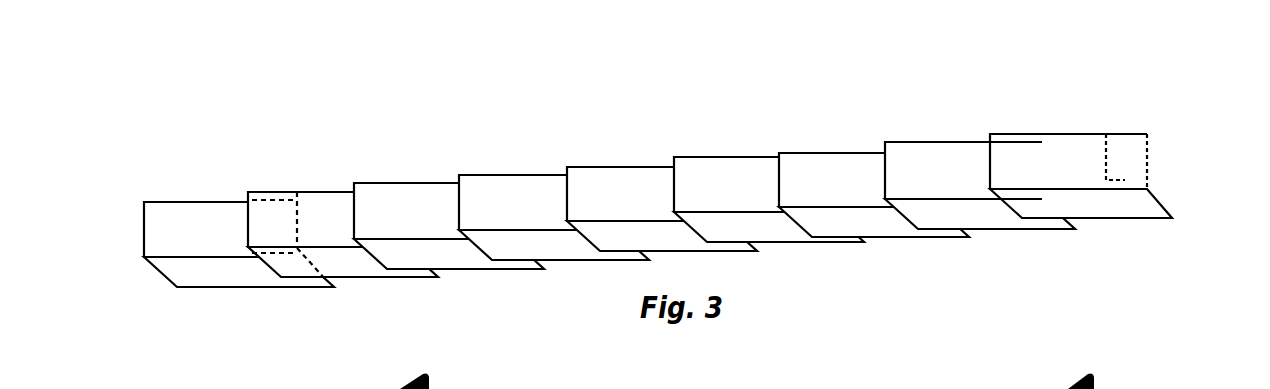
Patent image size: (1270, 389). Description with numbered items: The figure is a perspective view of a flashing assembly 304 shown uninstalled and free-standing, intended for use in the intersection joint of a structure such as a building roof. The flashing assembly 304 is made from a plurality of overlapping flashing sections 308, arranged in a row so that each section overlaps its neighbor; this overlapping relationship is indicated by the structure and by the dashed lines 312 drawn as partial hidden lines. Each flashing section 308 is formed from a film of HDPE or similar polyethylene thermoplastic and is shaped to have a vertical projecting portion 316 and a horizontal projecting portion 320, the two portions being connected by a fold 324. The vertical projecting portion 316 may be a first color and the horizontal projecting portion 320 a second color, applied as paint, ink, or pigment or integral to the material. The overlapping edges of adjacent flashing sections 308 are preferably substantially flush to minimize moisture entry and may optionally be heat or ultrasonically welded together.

The flashing assembly 304 is at (648, 73).
The flashing section 308 is at (1143, 202).
The dashed lines 312 is at (316, 211).
The vertical projecting portion 316 is at (928, 140).
The horizontal projecting portion 320 is at (1052, 231).
The fold 324 is at (968, 203).